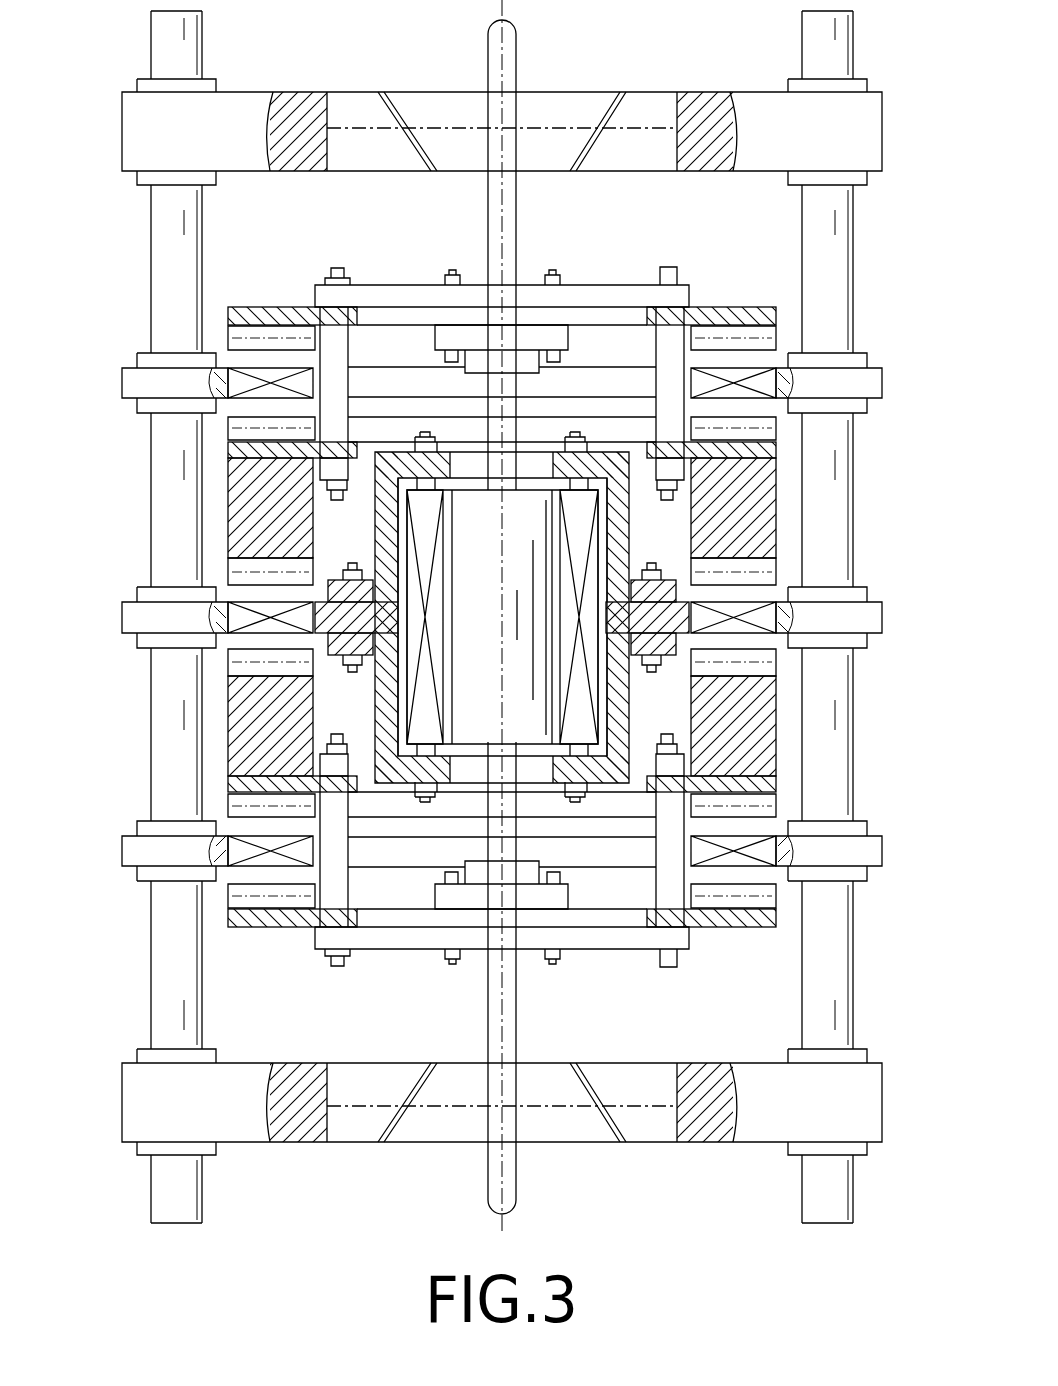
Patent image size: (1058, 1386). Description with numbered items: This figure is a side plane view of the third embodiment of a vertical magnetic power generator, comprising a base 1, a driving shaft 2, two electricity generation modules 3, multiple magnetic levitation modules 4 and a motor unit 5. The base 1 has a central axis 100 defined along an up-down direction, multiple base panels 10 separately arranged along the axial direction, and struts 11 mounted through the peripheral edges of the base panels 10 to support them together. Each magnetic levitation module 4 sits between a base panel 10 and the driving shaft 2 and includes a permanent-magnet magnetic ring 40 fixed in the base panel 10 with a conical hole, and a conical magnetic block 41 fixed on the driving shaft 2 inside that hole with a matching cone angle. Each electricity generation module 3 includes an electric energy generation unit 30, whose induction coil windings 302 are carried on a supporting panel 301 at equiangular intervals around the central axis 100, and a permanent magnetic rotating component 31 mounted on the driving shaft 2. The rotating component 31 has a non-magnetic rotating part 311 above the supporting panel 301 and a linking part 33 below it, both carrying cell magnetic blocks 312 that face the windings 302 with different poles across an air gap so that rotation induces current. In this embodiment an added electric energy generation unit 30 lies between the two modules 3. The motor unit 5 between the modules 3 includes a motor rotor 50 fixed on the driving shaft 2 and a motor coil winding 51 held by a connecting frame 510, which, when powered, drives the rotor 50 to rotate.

The base 1 is at (862, 66).
The base panel 10 is at (855, 145).
The strut 11 is at (162, 212).
The central axis 100 is at (498, 60).
The driving shaft 2 is at (516, 72).
The electricity generation module 3 is at (790, 328).
The electric energy generation unit 30 is at (240, 640).
The supporting panel 301 is at (152, 385).
The induction coil winding 302 is at (258, 366).
The permanent magnetic rotating component 31 is at (690, 284).
The rotating part 311 is at (292, 308).
The cell magnetic block 312 is at (228, 330).
The linking part 33 is at (228, 510).
The magnetic levitation module 4 is at (622, 95).
The magnetic ring 40 is at (668, 105).
The conical magnetic block 41 is at (545, 100).
The motor unit 5 is at (648, 521).
The connecting frame 510 is at (628, 553).
The motor coil winding 51 is at (600, 690).
The motor rotor 50 is at (548, 722).